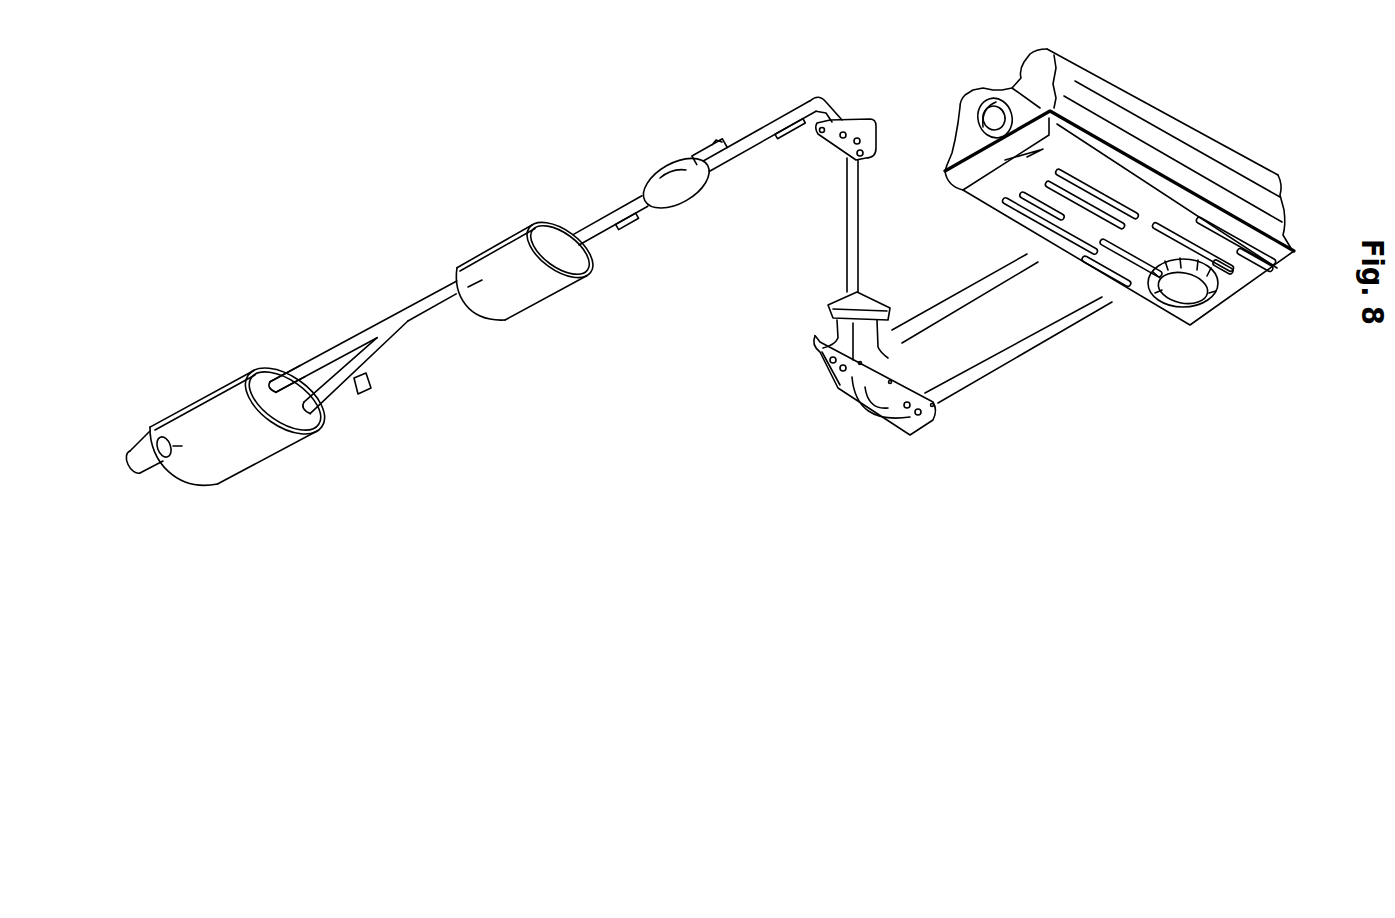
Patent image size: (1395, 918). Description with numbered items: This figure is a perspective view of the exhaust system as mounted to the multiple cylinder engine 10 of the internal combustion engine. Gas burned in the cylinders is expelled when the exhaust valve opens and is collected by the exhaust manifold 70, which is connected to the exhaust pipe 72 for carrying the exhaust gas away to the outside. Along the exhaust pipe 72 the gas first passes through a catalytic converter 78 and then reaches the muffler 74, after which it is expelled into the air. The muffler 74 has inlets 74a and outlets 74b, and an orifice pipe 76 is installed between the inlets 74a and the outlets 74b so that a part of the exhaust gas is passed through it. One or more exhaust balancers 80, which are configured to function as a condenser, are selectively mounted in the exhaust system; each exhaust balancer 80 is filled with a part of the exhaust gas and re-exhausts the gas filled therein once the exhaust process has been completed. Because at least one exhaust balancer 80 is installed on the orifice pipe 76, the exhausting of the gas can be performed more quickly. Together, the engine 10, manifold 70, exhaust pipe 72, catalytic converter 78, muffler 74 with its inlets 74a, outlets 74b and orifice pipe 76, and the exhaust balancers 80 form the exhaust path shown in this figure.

The multiple cylinder engine 10 is at (1190, 323).
The exhaust manifold 70 is at (868, 398).
The exhaust pipe 72 is at (432, 298).
The muffler 74 is at (210, 398).
The inlet 74a is at (333, 412).
The outlet 74b is at (140, 447).
The orifice pipe 76 is at (285, 378).
The catalytic converter 78 is at (683, 200).
The exhaust balancer 80 is at (370, 388).